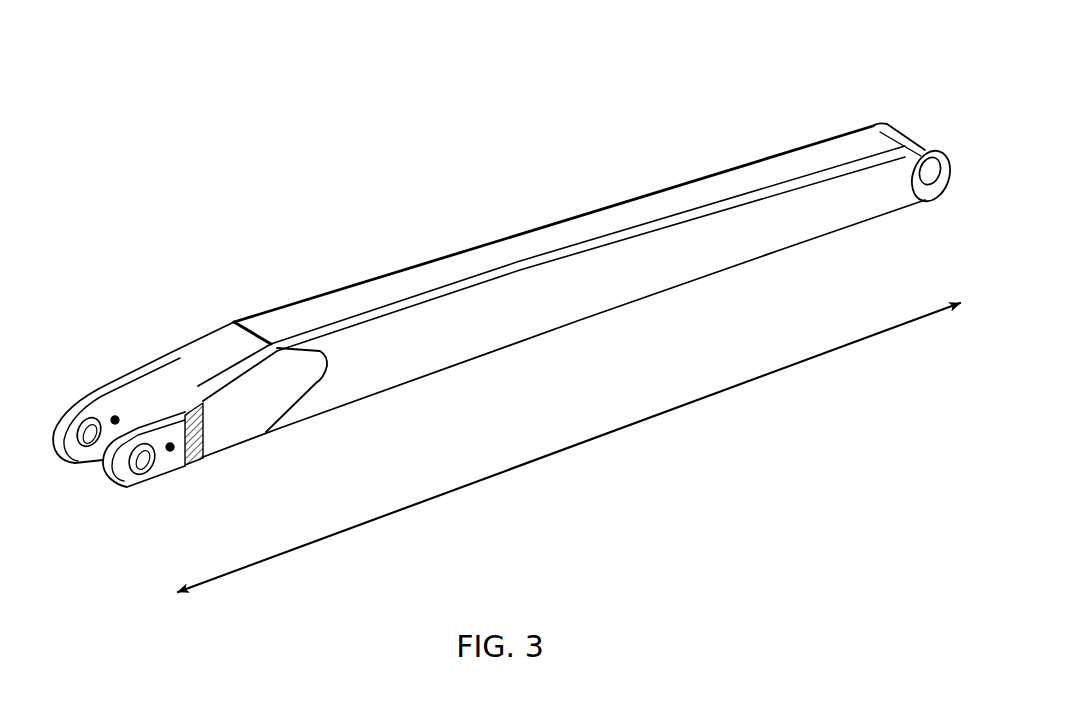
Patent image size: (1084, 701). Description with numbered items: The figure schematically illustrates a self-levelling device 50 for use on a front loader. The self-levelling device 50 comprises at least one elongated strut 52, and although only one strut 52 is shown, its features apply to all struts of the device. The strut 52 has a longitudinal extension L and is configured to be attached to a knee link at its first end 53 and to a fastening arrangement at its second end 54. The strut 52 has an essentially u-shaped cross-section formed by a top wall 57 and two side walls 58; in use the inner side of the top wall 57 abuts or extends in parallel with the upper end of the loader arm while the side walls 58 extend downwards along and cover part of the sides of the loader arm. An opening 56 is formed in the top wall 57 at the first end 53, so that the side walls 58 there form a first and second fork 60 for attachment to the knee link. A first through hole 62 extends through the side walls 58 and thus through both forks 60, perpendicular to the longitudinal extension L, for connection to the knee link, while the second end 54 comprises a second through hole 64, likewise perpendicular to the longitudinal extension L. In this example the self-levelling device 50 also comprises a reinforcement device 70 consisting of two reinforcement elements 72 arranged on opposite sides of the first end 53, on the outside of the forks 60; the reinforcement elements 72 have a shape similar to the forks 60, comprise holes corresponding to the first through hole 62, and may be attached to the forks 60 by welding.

The self-levelling device 50 is at (255, 188).
The elongated strut 52 is at (620, 203).
The first end 53 is at (146, 333).
The second end 54 is at (864, 103).
The opening 56 is at (180, 380).
The top wall 57 is at (468, 255).
The side walls 58 is at (297, 294).
The first and second fork 60 is at (128, 397).
The first through hole 62 is at (90, 440).
The second through hole 64 is at (923, 172).
The reinforcement device 70 is at (307, 442).
The reinforcement elements 72 is at (103, 385).
The longitudinal extension L is at (569, 447).